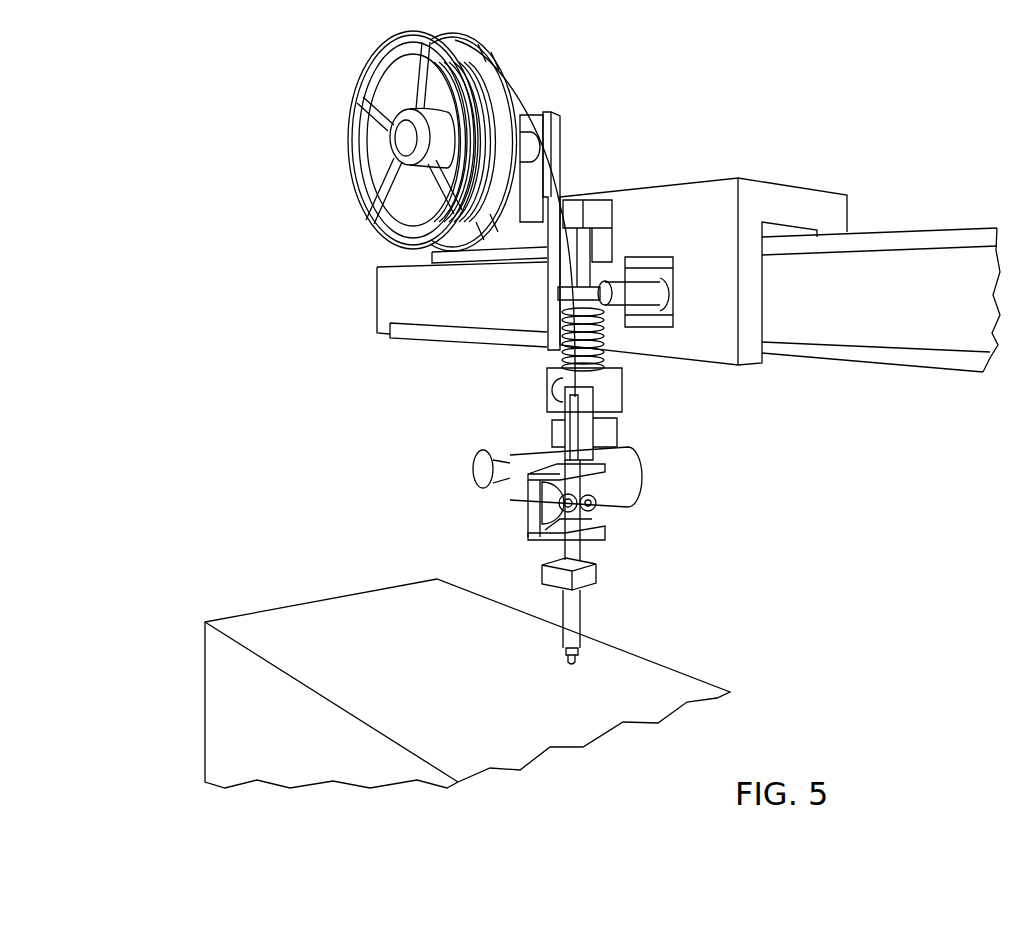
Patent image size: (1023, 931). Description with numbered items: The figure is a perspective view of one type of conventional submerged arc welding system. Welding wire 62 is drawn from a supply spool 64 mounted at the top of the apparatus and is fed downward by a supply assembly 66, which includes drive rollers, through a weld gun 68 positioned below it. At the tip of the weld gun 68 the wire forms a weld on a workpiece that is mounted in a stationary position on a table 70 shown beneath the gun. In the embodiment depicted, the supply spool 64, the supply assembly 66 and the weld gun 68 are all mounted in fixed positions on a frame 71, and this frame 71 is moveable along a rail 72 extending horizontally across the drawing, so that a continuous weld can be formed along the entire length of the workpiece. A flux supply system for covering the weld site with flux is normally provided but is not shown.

The welding wire 62 is at (524, 98).
The supply spool 64 is at (326, 122).
The supply assembly 66 is at (616, 519).
The weld gun 68 is at (562, 638).
The table 70 is at (317, 607).
The frame 71 is at (667, 186).
The rail 72 is at (930, 228).